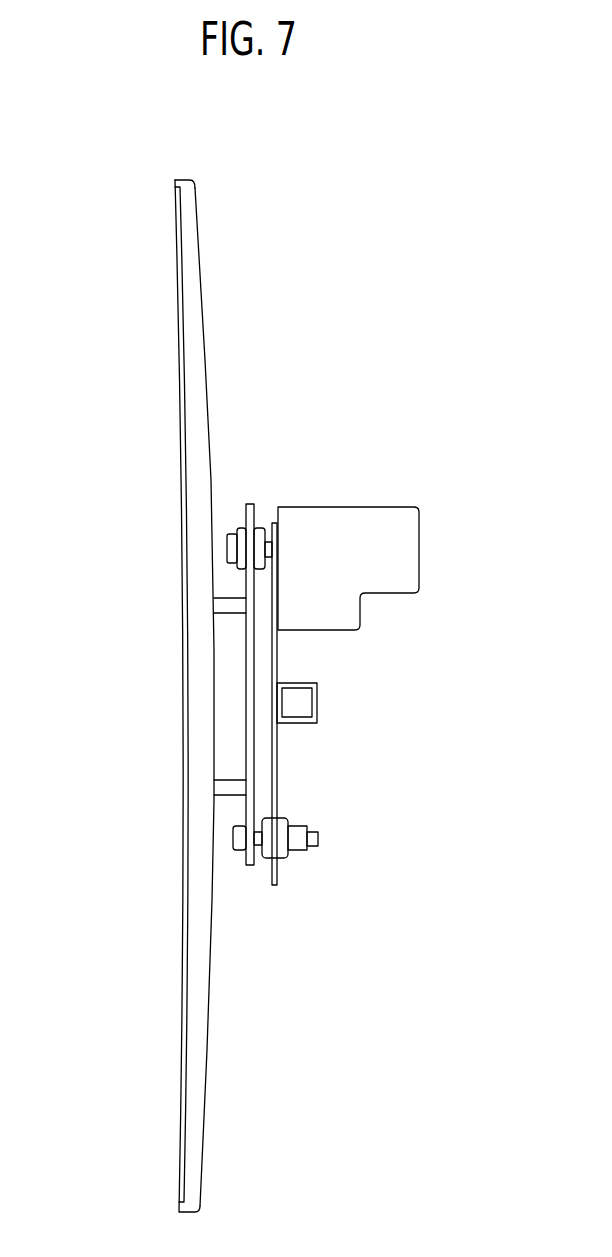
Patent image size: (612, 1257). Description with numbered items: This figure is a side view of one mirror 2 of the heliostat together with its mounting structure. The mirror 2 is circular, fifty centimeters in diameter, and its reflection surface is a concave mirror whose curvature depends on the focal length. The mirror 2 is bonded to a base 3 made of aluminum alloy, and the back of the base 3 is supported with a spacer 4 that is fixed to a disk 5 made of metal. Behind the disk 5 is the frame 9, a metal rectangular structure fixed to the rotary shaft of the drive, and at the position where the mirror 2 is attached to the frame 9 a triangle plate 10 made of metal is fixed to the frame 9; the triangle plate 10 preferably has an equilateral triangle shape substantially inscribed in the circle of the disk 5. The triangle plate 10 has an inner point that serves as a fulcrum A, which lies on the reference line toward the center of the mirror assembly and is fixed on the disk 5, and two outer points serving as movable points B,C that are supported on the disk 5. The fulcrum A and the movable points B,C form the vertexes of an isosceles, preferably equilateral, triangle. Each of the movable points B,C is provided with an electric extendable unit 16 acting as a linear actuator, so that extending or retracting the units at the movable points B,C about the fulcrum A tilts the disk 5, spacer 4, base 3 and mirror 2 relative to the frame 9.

The mirror 2 is at (178, 387).
The base 3 is at (207, 410).
The spacer 4 is at (228, 598).
The disk 5 is at (246, 670).
The frame 9 is at (317, 688).
The triangle plate 10 is at (277, 750).
The electric extendable unit 16 is at (355, 507).
The fulcrum A is at (230, 832).
The movable points B,C is at (222, 547).